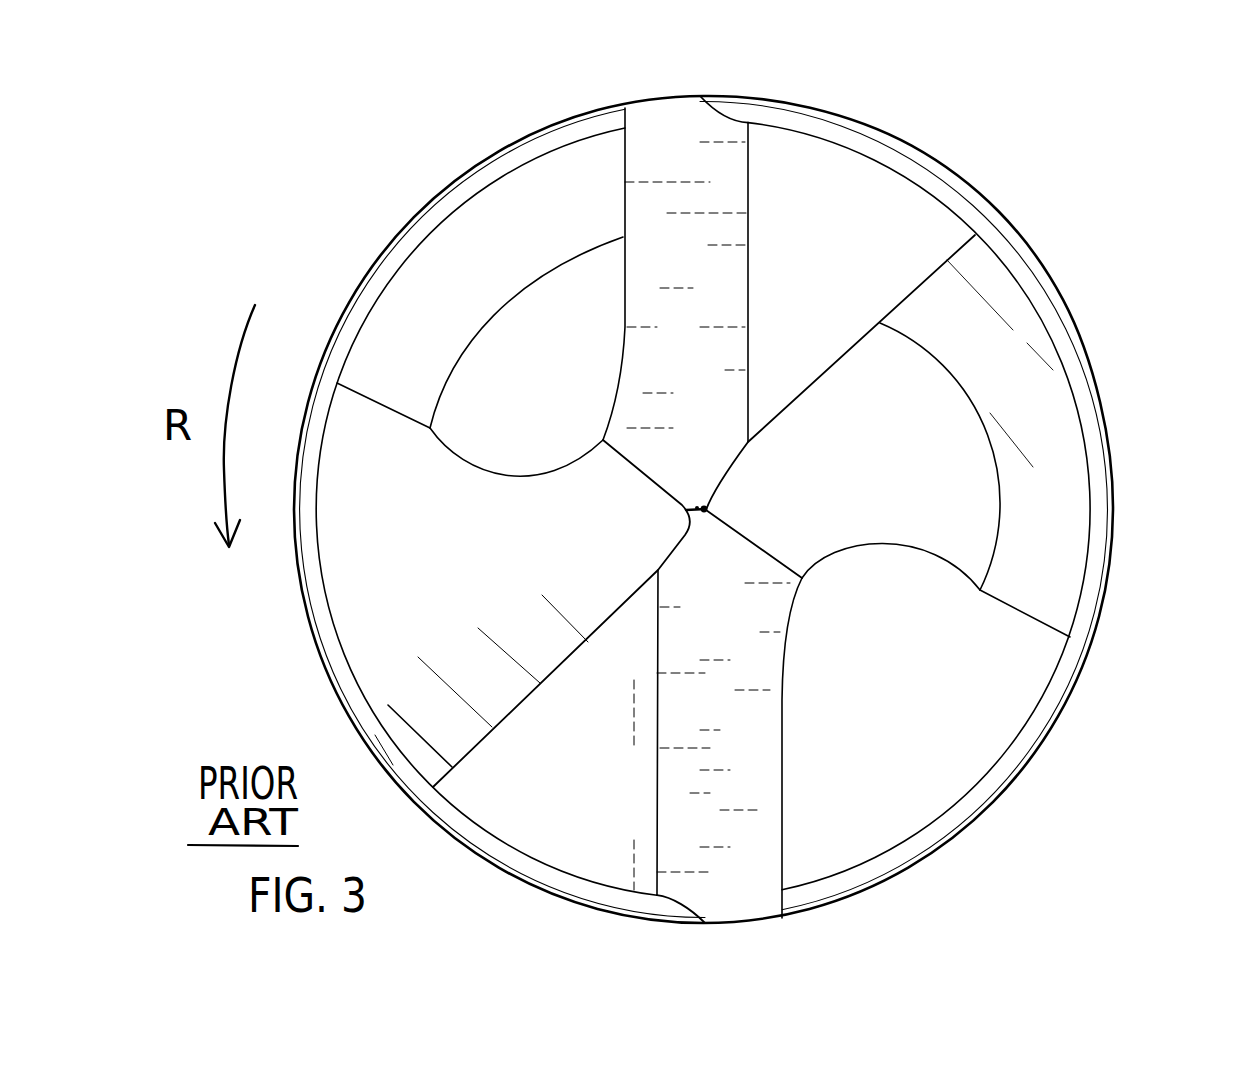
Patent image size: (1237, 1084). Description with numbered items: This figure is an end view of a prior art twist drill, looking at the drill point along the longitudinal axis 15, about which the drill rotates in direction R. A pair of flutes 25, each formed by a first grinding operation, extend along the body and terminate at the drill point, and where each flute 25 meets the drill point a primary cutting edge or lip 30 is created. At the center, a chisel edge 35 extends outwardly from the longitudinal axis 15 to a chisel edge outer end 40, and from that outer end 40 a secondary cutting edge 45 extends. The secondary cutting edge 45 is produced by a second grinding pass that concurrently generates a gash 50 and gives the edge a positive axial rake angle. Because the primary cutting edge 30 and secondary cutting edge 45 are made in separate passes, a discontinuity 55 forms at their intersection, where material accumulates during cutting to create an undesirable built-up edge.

The longitudinal axis 15 is at (713, 500).
The flute 25 is at (517, 363).
The primary cutting edge 30 is at (623, 272).
The chisel edge 35 is at (692, 505).
The chisel edge outer end 40 is at (725, 515).
The secondary cutting edge 45 is at (630, 457).
The gash 50 is at (1035, 540).
The discontinuity 55 is at (803, 576).